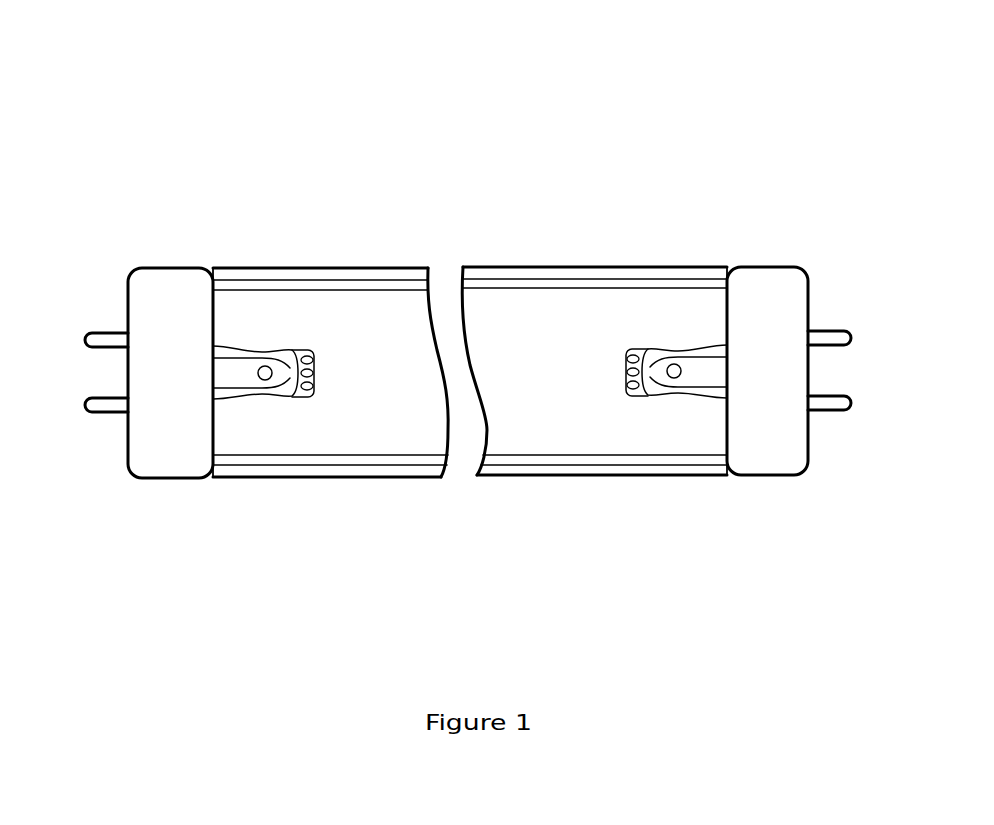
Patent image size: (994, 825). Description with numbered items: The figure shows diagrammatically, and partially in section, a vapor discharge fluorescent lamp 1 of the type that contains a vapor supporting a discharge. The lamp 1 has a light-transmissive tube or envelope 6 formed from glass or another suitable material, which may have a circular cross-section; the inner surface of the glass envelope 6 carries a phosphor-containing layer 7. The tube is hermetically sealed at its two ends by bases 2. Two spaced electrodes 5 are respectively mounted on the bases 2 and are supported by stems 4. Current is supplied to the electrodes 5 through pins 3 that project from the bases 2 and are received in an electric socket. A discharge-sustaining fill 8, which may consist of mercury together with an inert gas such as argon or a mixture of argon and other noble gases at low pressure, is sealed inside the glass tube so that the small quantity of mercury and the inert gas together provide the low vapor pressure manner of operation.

The fluorescent lamp 1 is at (423, 242).
The bases 2 is at (148, 480).
The pins 3 is at (107, 417).
The stems 4 is at (265, 399).
The electrodes 5 is at (318, 370).
The light-transmissive tube or envelope 6 is at (570, 477).
The phosphor-containing layer 7 is at (520, 455).
The discharge-sustaining fill 8 is at (352, 338).